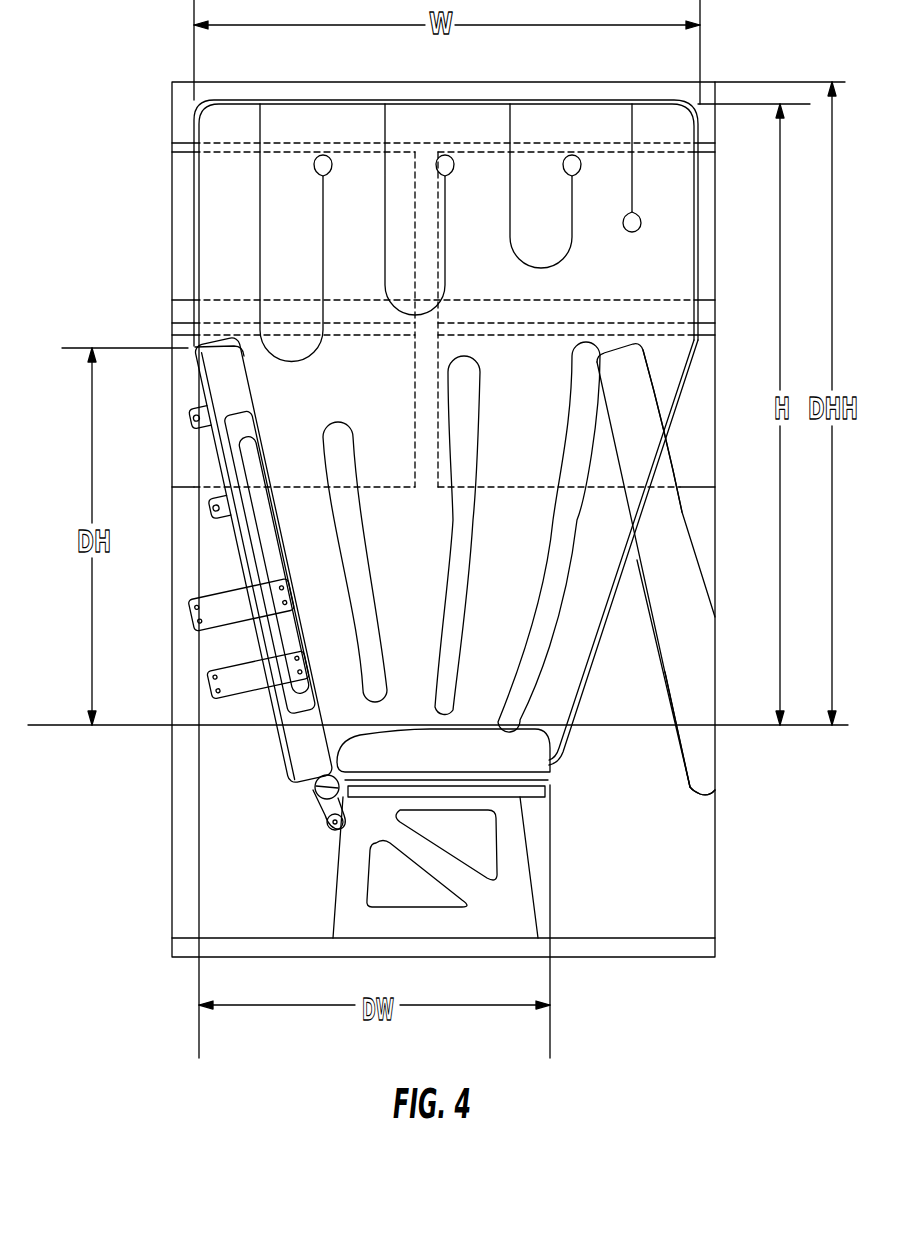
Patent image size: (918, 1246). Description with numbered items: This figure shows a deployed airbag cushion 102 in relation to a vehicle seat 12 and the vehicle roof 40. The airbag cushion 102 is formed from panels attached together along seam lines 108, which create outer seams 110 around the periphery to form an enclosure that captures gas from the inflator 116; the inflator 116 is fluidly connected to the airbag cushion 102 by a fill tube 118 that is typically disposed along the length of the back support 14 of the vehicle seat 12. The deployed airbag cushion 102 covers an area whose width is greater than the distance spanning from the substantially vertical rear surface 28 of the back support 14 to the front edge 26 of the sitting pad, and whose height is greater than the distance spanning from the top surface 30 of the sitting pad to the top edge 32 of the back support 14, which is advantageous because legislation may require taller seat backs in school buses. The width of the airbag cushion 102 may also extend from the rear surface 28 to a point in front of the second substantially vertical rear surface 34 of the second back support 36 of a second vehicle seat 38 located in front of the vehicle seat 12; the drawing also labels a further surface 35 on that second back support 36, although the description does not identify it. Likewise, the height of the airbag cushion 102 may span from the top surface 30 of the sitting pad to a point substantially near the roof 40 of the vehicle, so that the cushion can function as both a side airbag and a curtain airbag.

The vehicle seat 12 is at (513, 907).
The back support 14 is at (235, 390).
The front edge of the sitting pad 26 is at (563, 760).
The substantially vertical rear surface 28 is at (283, 750).
The top surface of the sitting pad 30 is at (460, 723).
The top edge of the back support 32 is at (213, 343).
The second substantially vertical rear surface 34 is at (657, 640).
The front surface of support 35 is at (680, 512).
The second back support 36 is at (697, 657).
The second vehicle seat 38 is at (668, 578).
The roof 40 is at (222, 88).
The airbag cushion 102 is at (226, 209).
The seam lines 108 is at (445, 287).
The outer seams 110 is at (558, 100).
The inflator 116 is at (215, 702).
The fill tube 118 is at (228, 458).